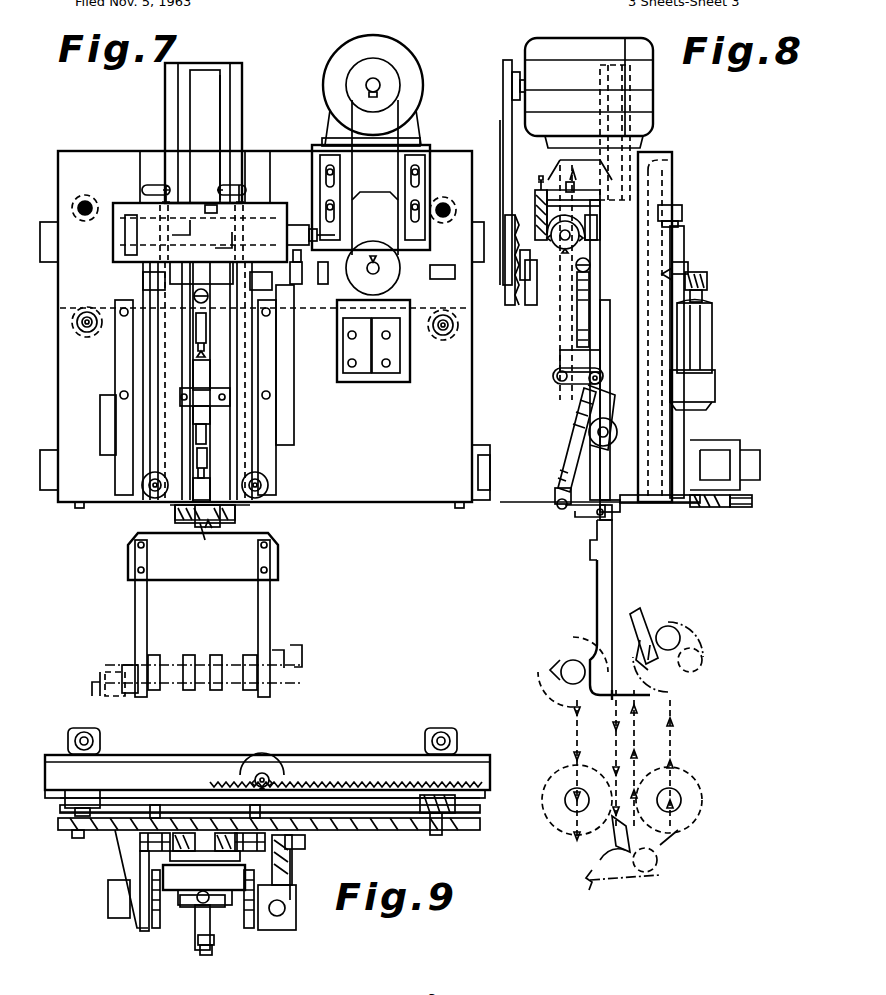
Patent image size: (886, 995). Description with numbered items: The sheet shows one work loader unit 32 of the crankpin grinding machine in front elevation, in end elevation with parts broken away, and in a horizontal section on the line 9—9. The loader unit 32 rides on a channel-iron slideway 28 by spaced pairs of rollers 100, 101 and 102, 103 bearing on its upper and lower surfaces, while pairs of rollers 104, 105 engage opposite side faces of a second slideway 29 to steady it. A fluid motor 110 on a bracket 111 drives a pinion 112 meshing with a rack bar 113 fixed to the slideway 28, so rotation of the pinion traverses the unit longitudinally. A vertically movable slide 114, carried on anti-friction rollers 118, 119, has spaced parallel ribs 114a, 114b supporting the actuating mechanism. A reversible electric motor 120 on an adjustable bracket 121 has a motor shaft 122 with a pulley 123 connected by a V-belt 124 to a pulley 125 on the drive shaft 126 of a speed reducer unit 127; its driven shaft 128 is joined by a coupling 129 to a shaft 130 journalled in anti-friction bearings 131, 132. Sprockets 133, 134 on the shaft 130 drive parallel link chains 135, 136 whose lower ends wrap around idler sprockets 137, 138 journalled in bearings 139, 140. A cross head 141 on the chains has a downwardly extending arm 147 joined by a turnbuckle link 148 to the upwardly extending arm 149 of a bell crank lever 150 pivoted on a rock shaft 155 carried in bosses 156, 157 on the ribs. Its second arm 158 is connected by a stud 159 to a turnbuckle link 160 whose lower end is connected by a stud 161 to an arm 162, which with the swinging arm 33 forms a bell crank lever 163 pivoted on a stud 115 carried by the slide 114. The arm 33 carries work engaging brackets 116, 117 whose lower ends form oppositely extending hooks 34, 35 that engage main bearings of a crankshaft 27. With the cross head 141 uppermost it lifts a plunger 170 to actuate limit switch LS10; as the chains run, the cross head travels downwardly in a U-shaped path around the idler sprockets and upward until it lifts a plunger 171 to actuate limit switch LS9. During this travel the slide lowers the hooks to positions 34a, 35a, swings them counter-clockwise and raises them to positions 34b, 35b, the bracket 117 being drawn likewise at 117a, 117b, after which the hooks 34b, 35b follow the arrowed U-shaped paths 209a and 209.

In FIG. 7, the work loader unit 32 is at (98, 138).
In FIG. 8, the work loader unit 32 is at (680, 166).
In FIG. 9, the work loader unit 32 is at (364, 840).
In FIG. 7, the section line 9 is at (43, 242).
In FIG. 8, the section line 9 is at (496, 260).
In FIG. 7, the vertically movable slide 114 is at (172, 90).
In FIG. 8, the vertically movable slide 114 is at (600, 435).
In FIG. 9, the vertically movable slide 114 is at (198, 833).
In FIG. 7, the rib 114a is at (186, 128).
In FIG. 7, the rib 114b is at (218, 101).
In FIG. 7, the limit switch LS10 is at (147, 160).
In FIG. 7, the limit switch LS9 is at (260, 160).
In FIG. 7, the sprocket 133 is at (140, 205).
In FIG. 8, the sprocket 133 is at (538, 200).
In FIG. 7, the sprocket 134 is at (200, 233).
In FIG. 7, the anti-friction bearing 131 is at (125, 248).
In FIG. 7, the plunger 170 is at (202, 227).
In FIG. 8, the plunger 170 is at (580, 190).
In FIG. 7, the plunger 171 is at (215, 212).
In FIG. 8, the plunger 171 is at (566, 185).
In FIG. 7, the shaft 130 is at (296, 224).
In FIG. 7, the roller 102 is at (80, 194).
In FIG. 7, the roller 103 is at (68, 318).
In FIG. 9, the roller 103 is at (88, 790).
In FIG. 7, the roller 100 is at (445, 196).
In FIG. 8, the roller 100 is at (678, 208).
In FIG. 7, the roller 101 is at (441, 340).
In FIG. 8, the roller 101 is at (712, 315).
In FIG. 9, the roller 101 is at (466, 800).
In FIG. 7, the guide rail 28 is at (470, 222).
In FIG. 8, the guide rail 28 is at (686, 238).
In FIG. 9, the guide rail 28 is at (398, 806).
In FIG. 7, the link chain 135 is at (155, 355).
In FIG. 8, the link chain 135 is at (573, 205).
In FIG. 9, the link chain 135 is at (160, 930).
In FIG. 7, the link chain 136 is at (268, 370).
In FIG. 9, the link chain 136 is at (250, 932).
In FIG. 7, the idler sprocket 137 is at (132, 452).
In FIG. 8, the idler sprocket 137 is at (570, 440).
In FIG. 9, the idler sprocket 137 is at (140, 893).
In FIG. 7, the cross head 141 is at (201, 380).
In FIG. 8, the cross head 141 is at (565, 255).
In FIG. 9, the cross head 141 is at (204, 877).
In FIG. 7, the downwardly extending arm 147 is at (194, 294).
In FIG. 8, the downwardly extending arm 147 is at (568, 285).
In FIG. 7, the turnbuckle link 148 is at (208, 328).
In FIG. 8, the turnbuckle link 148 is at (567, 282).
In FIG. 7, the bell crank lever 150 is at (212, 370).
In FIG. 8, the bell crank lever 150 is at (553, 378).
In FIG. 9, the bell crank lever 150 is at (196, 924).
In FIG. 7, the rock shaft 155 is at (178, 395).
In FIG. 8, the rock shaft 155 is at (580, 400).
In FIG. 9, the rock shaft 155 is at (217, 918).
In FIG. 7, the boss 156 is at (178, 402).
In FIG. 7, the boss 157 is at (235, 400).
In FIG. 7, the idler sprocket 138 is at (265, 462).
In FIG. 9, the idler sprocket 138 is at (268, 924).
In FIG. 7, the turnbuckle link 160 is at (255, 490).
In FIG. 8, the turnbuckle link 160 is at (562, 482).
In FIG. 9, the turnbuckle link 160 is at (212, 955).
In FIG. 7, the anti-friction roller 118 is at (140, 272).
In FIG. 9, the anti-friction roller 118 is at (140, 843).
In FIG. 7, the anti-friction roller 119 is at (262, 517).
In FIG. 8, the anti-friction roller 119 is at (626, 504).
In FIG. 9, the anti-friction roller 119 is at (295, 848).
In FIG. 7, the arm 162 is at (176, 512).
In FIG. 8, the arm 162 is at (598, 536).
In FIG. 7, the bell crank lever 163 is at (185, 541).
In FIG. 8, the bell crank lever 163 is at (572, 544).
In FIG. 7, the stud 115 is at (218, 530).
In FIG. 8, the stud 115 is at (629, 529).
In FIG. 7, the swinging arm 33 is at (203, 572).
In FIG. 8, the swinging arm 33 is at (612, 560).
In FIG. 7, the work engaging bracket 116 is at (136, 607).
In FIG. 7, the work engaging bracket 117 is at (263, 617).
In FIG. 8, the work engaging bracket 117 is at (597, 602).
In FIG. 7, the work supporting hook 34 is at (172, 686).
In FIG. 8, the work supporting hook 34 is at (555, 678).
In FIG. 7, the crankshaft 27 is at (105, 672).
In FIG. 7, the reversible electric motor 120 is at (348, 56).
In FIG. 8, the reversible electric motor 120 is at (590, 48).
In FIG. 7, the pulley 123 is at (384, 85).
In FIG. 7, the motor shaft 122 is at (376, 84).
In FIG. 8, the motor shaft 122 is at (503, 95).
In FIG. 7, the V-belt 124 is at (348, 110).
In FIG. 8, the V-belt 124 is at (503, 140).
In FIG. 7, the bracket 121 is at (428, 145).
In FIG. 8, the bracket 121 is at (594, 140).
In FIG. 7, the pulley 125 is at (395, 276).
In FIG. 8, the pulley 125 is at (501, 271).
In FIG. 7, the drive shaft 126 is at (400, 290).
In FIG. 8, the drive shaft 126 is at (506, 298).
In FIG. 7, the speed reducer unit 127 is at (382, 236).
In FIG. 8, the speed reducer unit 127 is at (513, 311).
In FIG. 7, the rack bar 113 is at (470, 270).
In FIG. 8, the rack bar 113 is at (690, 266).
In FIG. 9, the rack bar 113 is at (318, 778).
In FIG. 7, the coupling 129 is at (309, 264).
In FIG. 7, the anti-friction bearing 132 is at (293, 279).
In FIG. 7, the driven shaft 128 is at (333, 279).
In FIG. 7, the guide rail 29 is at (484, 500).
In FIG. 8, the guide rail 29 is at (712, 458).
In FIG. 9, the guide rail 29 is at (372, 756).
In FIG. 8, the driven pinion 112 is at (710, 282).
In FIG. 9, the driven pinion 112 is at (278, 760).
In FIG. 8, the fluid motor 110 is at (704, 346).
In FIG. 9, the fluid motor 110 is at (260, 752).
In FIG. 8, the bracket 111 is at (695, 360).
In FIG. 8, the roller 105 is at (742, 508).
In FIG. 9, the roller 105 is at (100, 742).
In FIG. 8, the roller 104 is at (694, 510).
In FIG. 8, the upwardly extending arm 149 is at (560, 365).
In FIG. 8, the stud 159 is at (556, 380).
In FIG. 8, the second arm 158 is at (585, 385).
In FIG. 8, the stud 161 is at (560, 510).
In FIG. 9, the stud 161 is at (198, 950).
In FIG. 8, the arm 117b is at (640, 626).
In FIG. 8, the work supporting hook 35 is at (632, 660).
In FIG. 8, the loader hook raised position 35b is at (700, 670).
In FIG. 8, the U-shaped path 209a is at (572, 730).
In FIG. 8, the U-shaped path 209 is at (674, 750).
In FIG. 8, the loader hook raised position 34b is at (672, 712).
In FIG. 8, the loader hook lowered position 34a is at (615, 890).
In FIG. 8, the arm 117a is at (604, 854).
In FIG. 8, the loader hook lowered position 35a is at (660, 862).
In FIG. 9, the bearing 139 is at (122, 920).
In FIG. 9, the bearing 140 is at (296, 920).